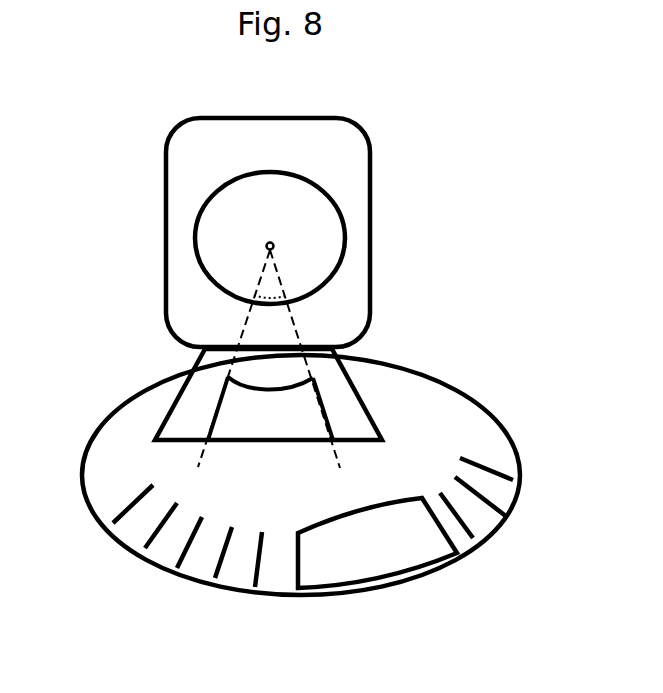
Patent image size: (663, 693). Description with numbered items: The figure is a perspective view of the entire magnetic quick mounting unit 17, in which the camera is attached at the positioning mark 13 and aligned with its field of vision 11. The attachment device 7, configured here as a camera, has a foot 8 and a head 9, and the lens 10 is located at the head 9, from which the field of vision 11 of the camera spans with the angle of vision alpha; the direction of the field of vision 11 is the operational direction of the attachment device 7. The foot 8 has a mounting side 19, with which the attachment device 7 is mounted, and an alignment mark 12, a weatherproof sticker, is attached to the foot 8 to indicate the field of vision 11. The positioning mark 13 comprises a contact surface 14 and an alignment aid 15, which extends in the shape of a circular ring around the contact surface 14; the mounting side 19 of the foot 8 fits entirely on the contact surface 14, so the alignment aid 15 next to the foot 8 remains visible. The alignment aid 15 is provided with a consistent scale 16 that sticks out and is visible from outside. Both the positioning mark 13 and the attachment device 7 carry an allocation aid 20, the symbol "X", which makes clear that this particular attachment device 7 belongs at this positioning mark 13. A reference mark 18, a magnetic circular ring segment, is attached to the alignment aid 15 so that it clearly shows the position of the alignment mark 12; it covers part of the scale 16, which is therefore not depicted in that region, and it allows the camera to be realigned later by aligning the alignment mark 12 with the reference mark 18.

The attachment device 7 is at (235, 185).
The foot 8 is at (200, 422).
The head 9 is at (183, 178).
The lens 10 is at (235, 257).
The field of vision 11 is at (278, 328).
The alignment mark 12 is at (273, 413).
The positioning mark 13 is at (432, 378).
The contact surface 14 is at (363, 470).
The alignment aid 15 is at (480, 442).
The scale 16 is at (507, 483).
The magnetic quick mounting unit 17 is at (427, 217).
The reference mark 18 is at (358, 563).
The mounting side 19 is at (170, 447).
The allocation aid 20 is at (345, 143).